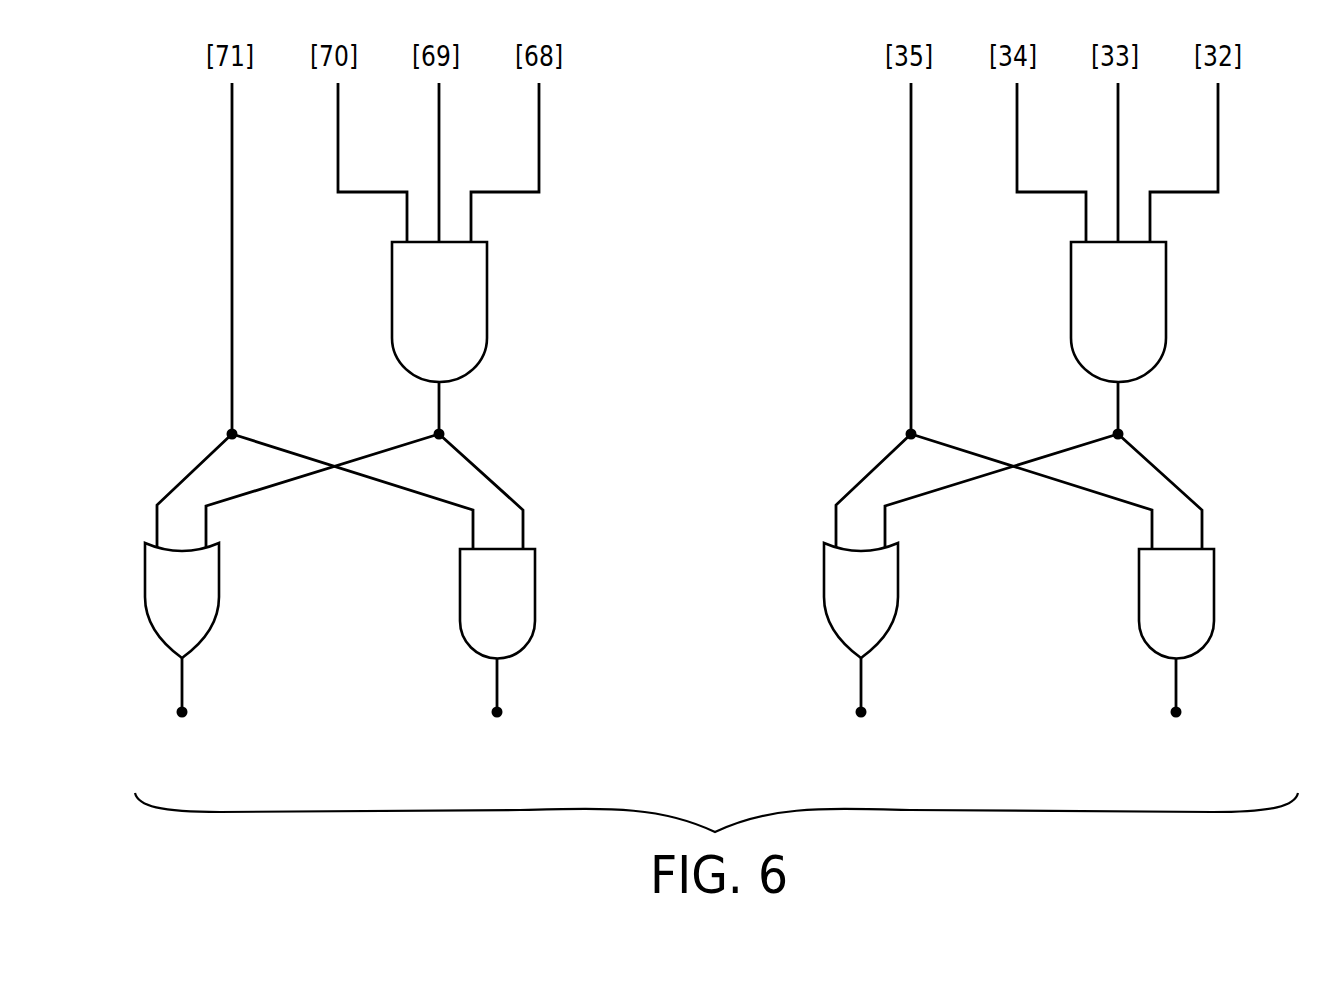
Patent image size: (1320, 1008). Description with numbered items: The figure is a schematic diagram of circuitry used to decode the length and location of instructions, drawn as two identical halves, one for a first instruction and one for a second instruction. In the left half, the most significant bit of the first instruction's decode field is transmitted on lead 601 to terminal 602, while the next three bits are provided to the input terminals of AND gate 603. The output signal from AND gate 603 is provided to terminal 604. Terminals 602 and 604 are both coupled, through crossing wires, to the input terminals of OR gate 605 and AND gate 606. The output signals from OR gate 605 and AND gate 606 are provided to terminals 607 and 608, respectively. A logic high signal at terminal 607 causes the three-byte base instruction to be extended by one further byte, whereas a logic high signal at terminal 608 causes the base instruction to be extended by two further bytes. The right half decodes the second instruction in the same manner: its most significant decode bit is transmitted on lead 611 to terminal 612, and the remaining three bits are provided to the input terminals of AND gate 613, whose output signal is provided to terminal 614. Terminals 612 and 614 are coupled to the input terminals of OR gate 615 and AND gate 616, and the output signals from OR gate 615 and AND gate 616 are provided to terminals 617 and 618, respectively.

The lead 601 is at (232, 201).
The terminal 602 is at (228, 434).
The AND gate 603 is at (478, 288).
The terminal 604 is at (444, 436).
The OR gate 605 is at (205, 573).
The AND gate 606 is at (523, 593).
The terminal 607 is at (187, 713).
The terminal 608 is at (502, 713).
The lead 611 is at (864, 258).
The terminal 612 is at (862, 428).
The AND gate 613 is at (1136, 258).
The terminal 614 is at (1163, 438).
The OR gate 615 is at (903, 600).
The AND gate 616 is at (1219, 604).
The terminal 617 is at (906, 695).
The terminal 618 is at (1224, 695).